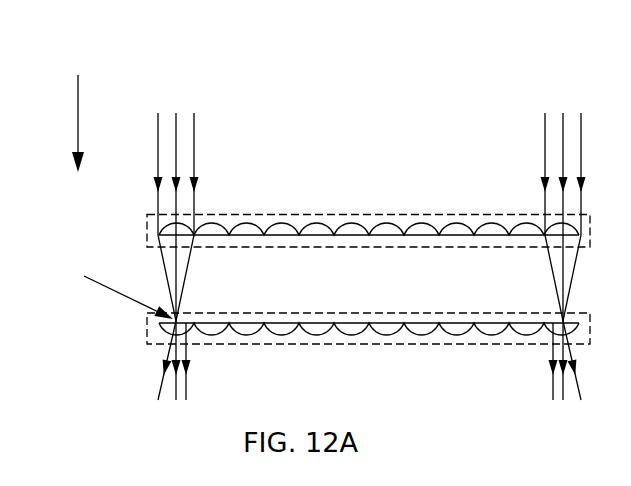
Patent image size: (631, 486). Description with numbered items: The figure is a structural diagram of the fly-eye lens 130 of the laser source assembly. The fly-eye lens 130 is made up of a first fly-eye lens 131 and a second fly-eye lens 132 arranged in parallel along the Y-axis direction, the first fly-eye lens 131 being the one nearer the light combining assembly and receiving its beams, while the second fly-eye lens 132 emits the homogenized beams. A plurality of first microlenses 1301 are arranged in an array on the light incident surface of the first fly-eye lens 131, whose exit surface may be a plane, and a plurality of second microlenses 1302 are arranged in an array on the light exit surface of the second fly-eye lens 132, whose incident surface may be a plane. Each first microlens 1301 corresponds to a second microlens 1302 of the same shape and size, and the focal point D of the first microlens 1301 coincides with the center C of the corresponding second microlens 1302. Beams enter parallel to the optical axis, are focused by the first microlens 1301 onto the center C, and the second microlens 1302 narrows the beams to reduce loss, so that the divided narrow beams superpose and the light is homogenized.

The fly-eye lens 130 is at (77, 33).
The first fly-eye lens 131 is at (134, 233).
The second fly-eye lens 132 is at (134, 330).
The first microlens 1301 is at (248, 222).
The second microlens 1302 is at (257, 334).